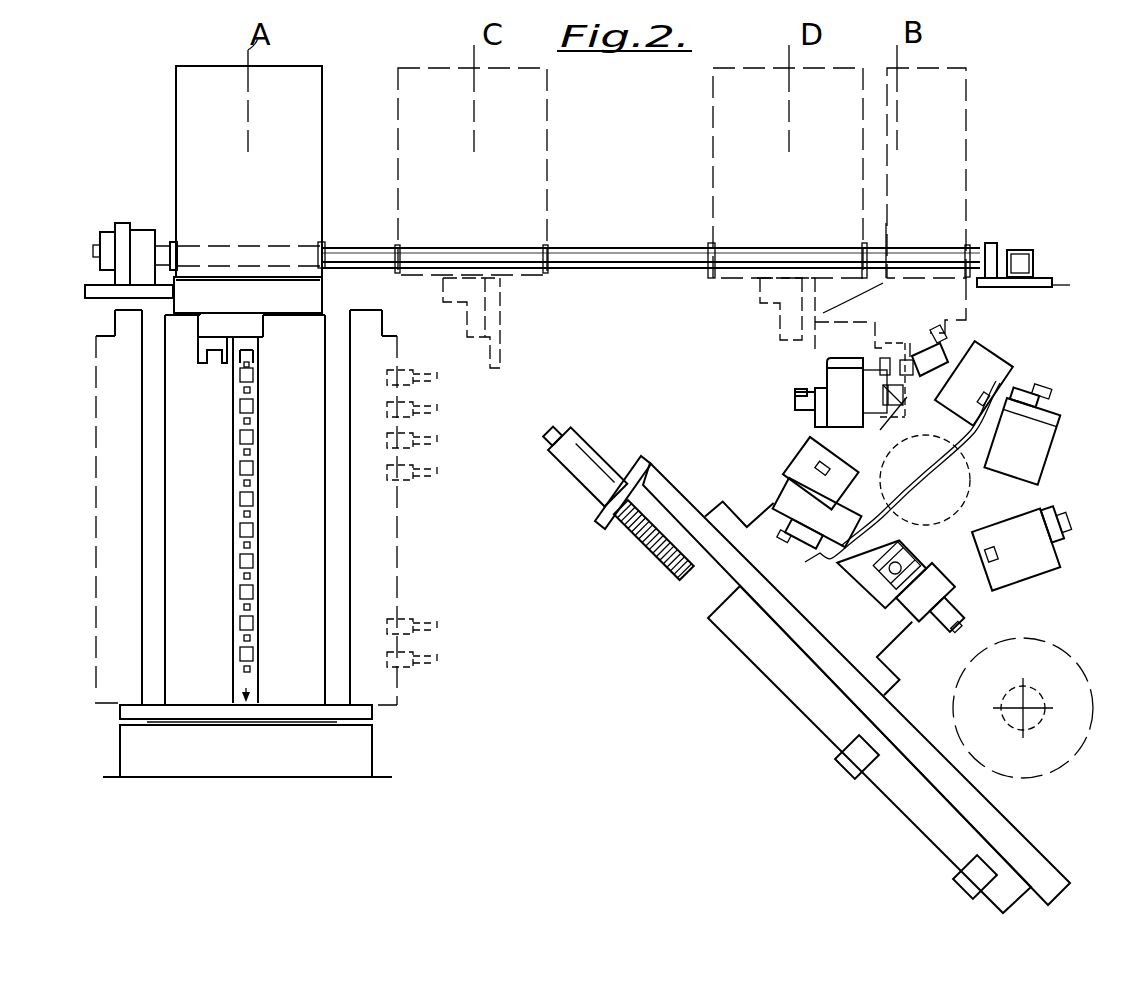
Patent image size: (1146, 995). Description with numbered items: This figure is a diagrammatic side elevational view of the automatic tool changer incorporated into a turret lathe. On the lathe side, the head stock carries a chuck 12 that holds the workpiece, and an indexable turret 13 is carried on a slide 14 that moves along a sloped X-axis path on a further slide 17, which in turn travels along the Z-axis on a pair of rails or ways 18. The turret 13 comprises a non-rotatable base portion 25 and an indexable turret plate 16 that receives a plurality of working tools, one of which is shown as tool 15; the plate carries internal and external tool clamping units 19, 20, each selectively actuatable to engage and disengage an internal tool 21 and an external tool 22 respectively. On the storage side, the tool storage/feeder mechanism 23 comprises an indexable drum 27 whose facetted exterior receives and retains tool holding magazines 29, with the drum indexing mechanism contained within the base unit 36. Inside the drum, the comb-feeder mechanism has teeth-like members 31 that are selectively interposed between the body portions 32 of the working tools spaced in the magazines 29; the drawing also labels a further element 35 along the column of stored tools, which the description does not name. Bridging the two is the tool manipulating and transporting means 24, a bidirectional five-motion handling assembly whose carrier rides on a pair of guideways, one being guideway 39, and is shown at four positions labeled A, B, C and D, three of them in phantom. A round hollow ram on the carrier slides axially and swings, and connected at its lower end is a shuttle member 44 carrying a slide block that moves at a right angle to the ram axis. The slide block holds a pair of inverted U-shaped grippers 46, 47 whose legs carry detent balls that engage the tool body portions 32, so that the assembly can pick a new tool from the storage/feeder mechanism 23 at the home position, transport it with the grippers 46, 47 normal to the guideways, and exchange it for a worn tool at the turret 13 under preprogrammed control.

The chuck 12 is at (1075, 672).
The indexable turret 13 is at (1021, 492).
The slide 14 is at (1017, 832).
The working tool 15 is at (1045, 386).
The turret plate 16 is at (820, 437).
The slide 17 is at (803, 703).
The rails or ways 18 is at (855, 770).
The internal tool clamping unit 19 is at (902, 471).
The external tool clamping unit 20 is at (803, 402).
The internal tool 21 is at (915, 390).
The external tool 22 is at (800, 390).
The tool storage/feeder mechanism 23 is at (348, 570).
The tool manipulating and transporting means 24 is at (176, 143).
The turret base portion 25 is at (768, 553).
The indexable drum 27 is at (343, 515).
The tool holding magazine 29 is at (97, 685).
The teeth-like members 31 is at (240, 455).
The tool body portion 32 is at (392, 420).
The chain rollers 35 is at (252, 438).
The base unit 36 is at (145, 765).
The guideway 39 is at (633, 256).
The shuttle member 44 is at (307, 296).
The gripper mechanism 46 is at (200, 352).
The gripper mechanism 47 is at (258, 356).